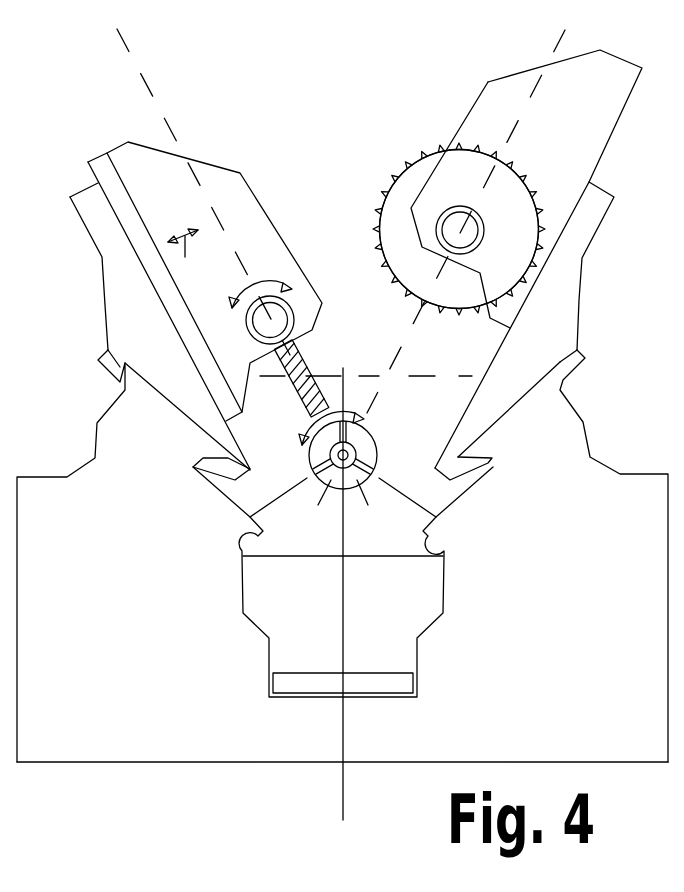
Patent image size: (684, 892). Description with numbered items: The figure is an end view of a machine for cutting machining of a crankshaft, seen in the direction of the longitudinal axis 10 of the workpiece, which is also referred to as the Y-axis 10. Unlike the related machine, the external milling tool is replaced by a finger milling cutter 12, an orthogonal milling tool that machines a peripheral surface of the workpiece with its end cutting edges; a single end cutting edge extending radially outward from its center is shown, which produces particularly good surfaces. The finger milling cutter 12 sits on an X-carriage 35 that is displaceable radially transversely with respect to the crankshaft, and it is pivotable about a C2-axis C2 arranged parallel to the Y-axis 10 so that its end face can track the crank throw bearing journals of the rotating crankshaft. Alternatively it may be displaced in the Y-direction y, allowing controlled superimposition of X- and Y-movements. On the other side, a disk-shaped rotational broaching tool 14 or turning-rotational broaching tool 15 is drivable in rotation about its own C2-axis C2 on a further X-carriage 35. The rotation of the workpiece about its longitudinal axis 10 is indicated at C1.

The longitudinal axis 10 is at (355, 448).
The finger milling cutter 12 is at (297, 362).
The disk-shaped rotational broaching tool 14 is at (426, 149).
The turning-rotational broaching tool 15 is at (426, 149).
The X-carriage 35 is at (196, 311).
The rotation direction of hub C1 is at (304, 428).
The C2-axis C2 is at (260, 278).
The Y-direction y is at (188, 259).